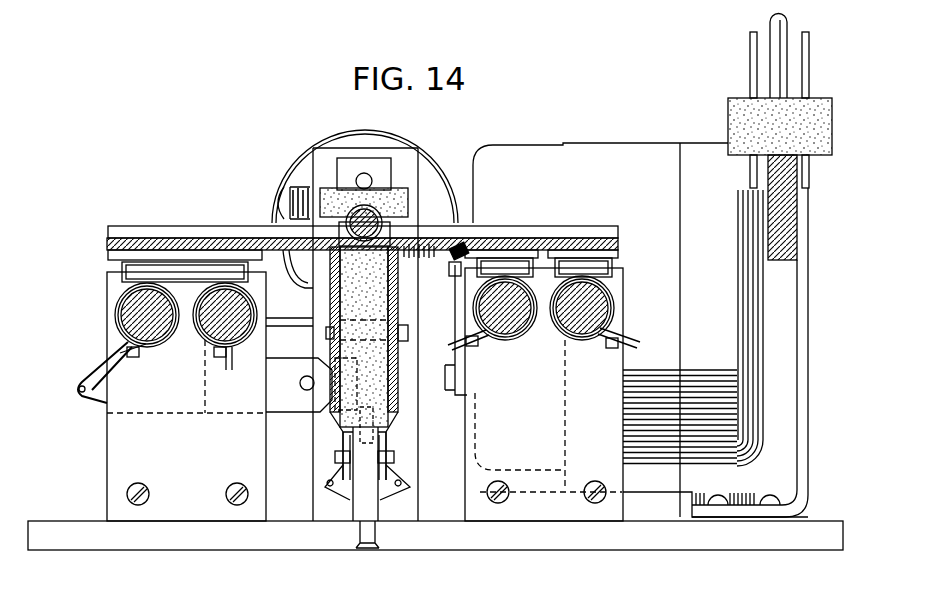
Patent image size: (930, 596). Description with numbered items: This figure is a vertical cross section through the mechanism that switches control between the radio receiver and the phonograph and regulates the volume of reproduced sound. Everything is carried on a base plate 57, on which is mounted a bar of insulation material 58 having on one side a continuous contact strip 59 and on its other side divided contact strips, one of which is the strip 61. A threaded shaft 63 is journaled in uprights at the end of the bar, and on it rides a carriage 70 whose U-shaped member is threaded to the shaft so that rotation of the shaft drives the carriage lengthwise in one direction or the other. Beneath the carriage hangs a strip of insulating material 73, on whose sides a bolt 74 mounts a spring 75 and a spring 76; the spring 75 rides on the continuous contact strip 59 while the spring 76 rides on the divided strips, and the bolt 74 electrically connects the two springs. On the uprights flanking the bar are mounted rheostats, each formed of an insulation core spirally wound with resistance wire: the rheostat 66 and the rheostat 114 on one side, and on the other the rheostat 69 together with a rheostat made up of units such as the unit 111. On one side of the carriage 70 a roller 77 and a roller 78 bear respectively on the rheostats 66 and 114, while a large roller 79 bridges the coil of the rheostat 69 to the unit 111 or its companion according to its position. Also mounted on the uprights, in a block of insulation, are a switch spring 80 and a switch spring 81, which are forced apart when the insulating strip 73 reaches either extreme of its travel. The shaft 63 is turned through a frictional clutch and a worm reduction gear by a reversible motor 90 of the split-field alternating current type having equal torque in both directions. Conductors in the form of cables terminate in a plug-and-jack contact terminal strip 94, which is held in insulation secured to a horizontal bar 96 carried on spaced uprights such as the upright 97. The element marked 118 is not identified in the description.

The base plate 57 is at (435, 535).
The bar of insulation material 58 is at (376, 480).
The continuous contact strip 59 is at (352, 490).
The divided contact strip 61 is at (380, 510).
The threaded shaft 63 is at (368, 212).
The rheostat 66 is at (585, 332).
The rheostat 69 is at (152, 335).
The carriage 70 is at (200, 238).
The strip of insulating material 73 is at (364, 363).
The bolt 74 is at (330, 333).
The spring 75 is at (345, 430).
The spring 76 is at (388, 437).
The roller 77 is at (600, 263).
The roller 78 is at (470, 290).
The large roller 79 is at (197, 282).
The switch spring 80 is at (334, 410).
The switch spring 81 is at (299, 385).
The reversible motor 90 is at (640, 330).
The contact terminal strip 94 is at (736, 98).
The horizontal bar 96 is at (790, 240).
The upright 97 is at (806, 326).
The rheostat unit 111 is at (240, 350).
The rheostat 114 is at (509, 332).
The core 118 is at (385, 385).